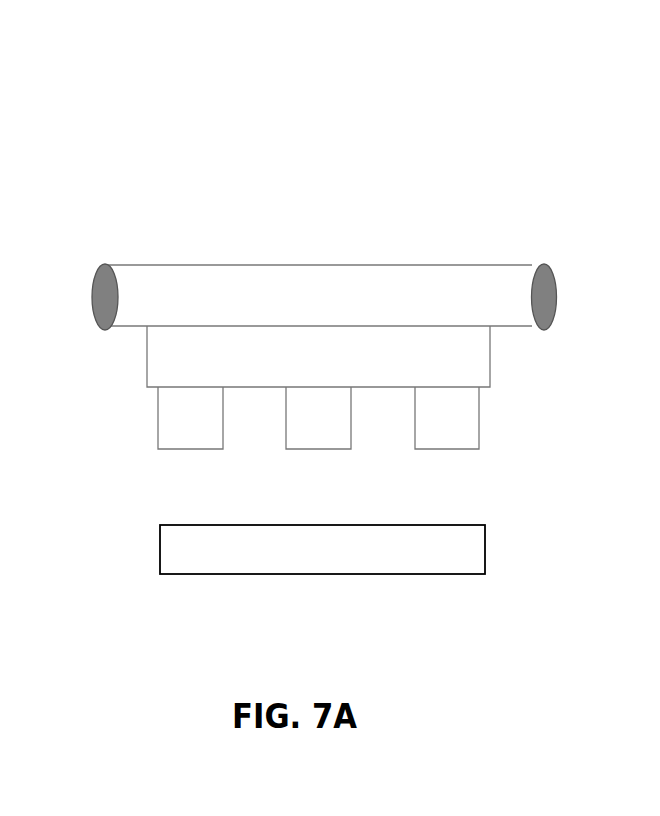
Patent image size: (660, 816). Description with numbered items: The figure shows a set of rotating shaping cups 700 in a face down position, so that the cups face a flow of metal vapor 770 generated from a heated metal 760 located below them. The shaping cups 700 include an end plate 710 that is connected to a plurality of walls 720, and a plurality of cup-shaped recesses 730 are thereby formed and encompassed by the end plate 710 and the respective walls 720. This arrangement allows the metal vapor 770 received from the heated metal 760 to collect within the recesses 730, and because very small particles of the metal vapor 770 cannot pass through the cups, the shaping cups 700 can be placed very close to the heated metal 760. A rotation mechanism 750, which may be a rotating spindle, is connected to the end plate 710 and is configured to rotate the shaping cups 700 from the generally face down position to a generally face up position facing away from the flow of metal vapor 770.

The rotating shaping cups 700 is at (164, 194).
The rotation mechanism 750 is at (398, 295).
The end plate 710 is at (484, 355).
The walls 720 is at (471, 415).
The cup-shaped recesses 730 is at (386, 426).
The metal vapor 770 is at (205, 502).
The heated metal 760 is at (180, 560).